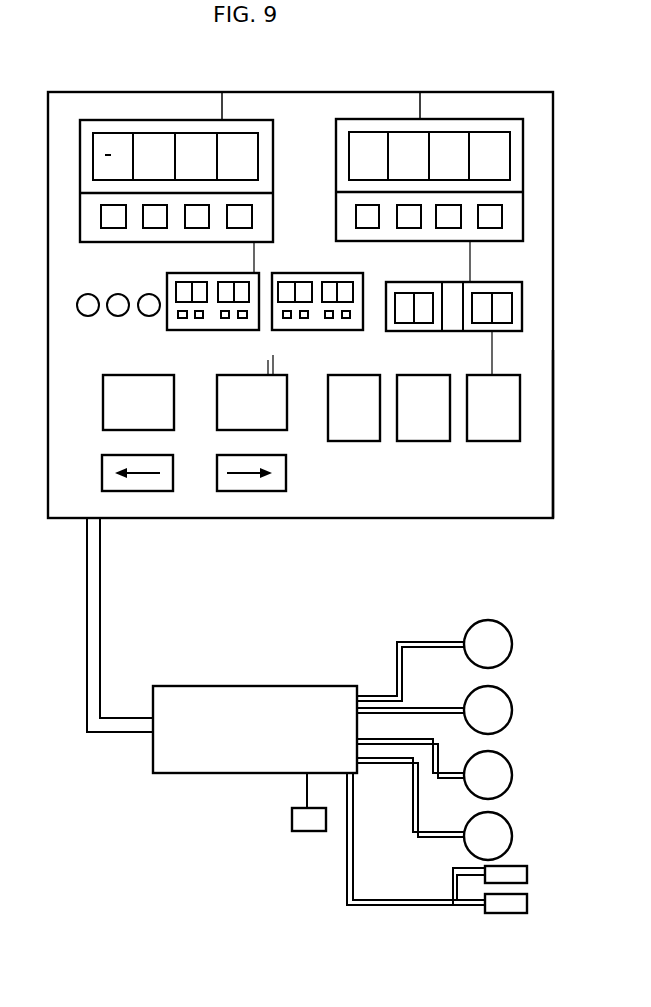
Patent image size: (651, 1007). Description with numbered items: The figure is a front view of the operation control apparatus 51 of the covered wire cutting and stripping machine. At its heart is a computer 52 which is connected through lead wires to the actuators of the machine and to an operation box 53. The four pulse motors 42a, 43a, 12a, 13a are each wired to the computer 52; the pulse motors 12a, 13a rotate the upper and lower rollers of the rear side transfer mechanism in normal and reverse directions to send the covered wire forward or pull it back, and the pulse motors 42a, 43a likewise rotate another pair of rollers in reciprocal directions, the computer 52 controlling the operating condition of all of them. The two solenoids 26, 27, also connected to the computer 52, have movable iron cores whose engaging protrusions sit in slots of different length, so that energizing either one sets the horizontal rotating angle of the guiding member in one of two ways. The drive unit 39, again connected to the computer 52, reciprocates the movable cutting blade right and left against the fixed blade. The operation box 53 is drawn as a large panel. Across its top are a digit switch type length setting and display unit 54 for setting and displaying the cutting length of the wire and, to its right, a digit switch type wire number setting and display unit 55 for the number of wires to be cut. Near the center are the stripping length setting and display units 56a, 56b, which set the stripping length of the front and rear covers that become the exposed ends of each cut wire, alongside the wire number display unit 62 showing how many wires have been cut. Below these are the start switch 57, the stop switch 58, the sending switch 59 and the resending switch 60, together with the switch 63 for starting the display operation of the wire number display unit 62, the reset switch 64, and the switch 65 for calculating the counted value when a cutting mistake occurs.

The control panel 51 is at (92, 88).
The computer 52 is at (210, 690).
The operation box 53 is at (553, 494).
The length setting and display unit 54 is at (273, 148).
The wire number setting and display unit 55 is at (336, 176).
The stripping length setting and display unit 56a is at (212, 324).
The stripping length setting and display unit 56b is at (316, 322).
The start switch 57 is at (103, 402).
The stop switch 58 is at (217, 402).
The sending switch 59 is at (102, 470).
The resending switch 60 is at (217, 470).
The wire number display unit 62 is at (415, 282).
The switch 63 is at (352, 441).
The reset switch 64 is at (418, 441).
The switch 65 is at (491, 441).
The drive unit 39 is at (300, 830).
The pulse motor 42a is at (509, 649).
The pulse motor 43a is at (509, 710).
The pulse motor 12a is at (509, 775).
The pulse motor 13a is at (509, 837).
The solenoid 26 is at (525, 876).
The solenoid 27 is at (525, 904).